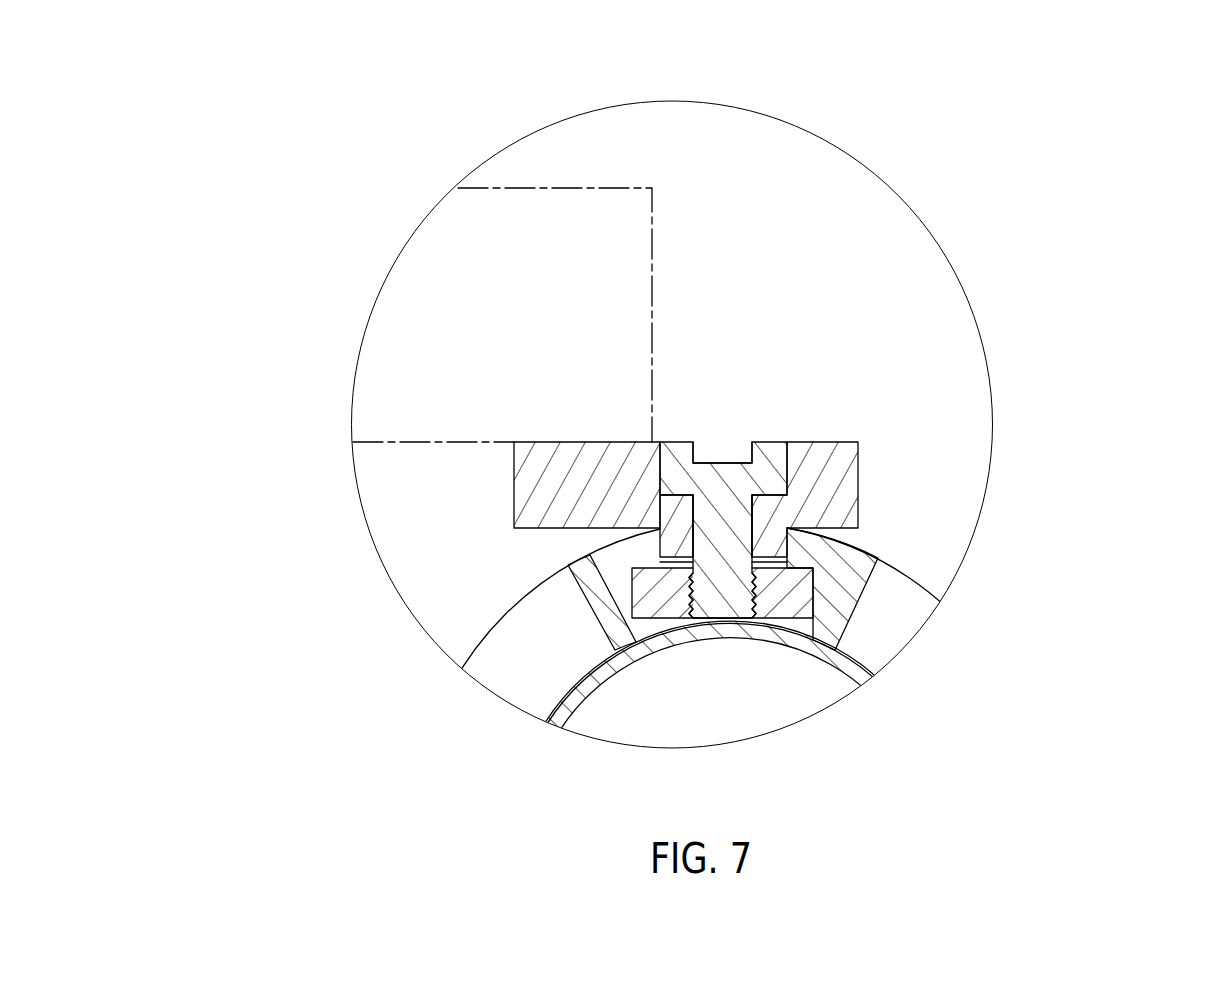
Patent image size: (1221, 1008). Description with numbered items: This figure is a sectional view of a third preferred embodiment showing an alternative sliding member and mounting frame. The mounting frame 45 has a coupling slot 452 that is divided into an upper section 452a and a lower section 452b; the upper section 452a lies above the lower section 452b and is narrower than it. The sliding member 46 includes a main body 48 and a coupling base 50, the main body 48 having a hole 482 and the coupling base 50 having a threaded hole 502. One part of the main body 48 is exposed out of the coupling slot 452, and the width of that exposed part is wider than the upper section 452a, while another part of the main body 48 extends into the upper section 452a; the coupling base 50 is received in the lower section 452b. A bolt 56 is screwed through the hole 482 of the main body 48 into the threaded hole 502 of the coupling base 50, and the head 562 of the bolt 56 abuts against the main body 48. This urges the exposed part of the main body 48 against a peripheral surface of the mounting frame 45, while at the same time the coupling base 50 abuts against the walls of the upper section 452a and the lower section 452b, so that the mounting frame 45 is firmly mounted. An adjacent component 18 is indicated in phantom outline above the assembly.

The housing / phantom component 18 is at (550, 180).
The mounting frame 45 is at (920, 588).
The coupling slot 452 is at (616, 589).
The upper section 452a is at (655, 532).
The lower section 452b is at (653, 591).
The sliding member 46 is at (876, 441).
The main body 48 is at (876, 446).
The hole 482 is at (755, 528).
The coupling base 50 is at (785, 594).
The threaded hole 502 is at (755, 592).
The bolt 56 is at (757, 522).
The head 562 is at (724, 478).